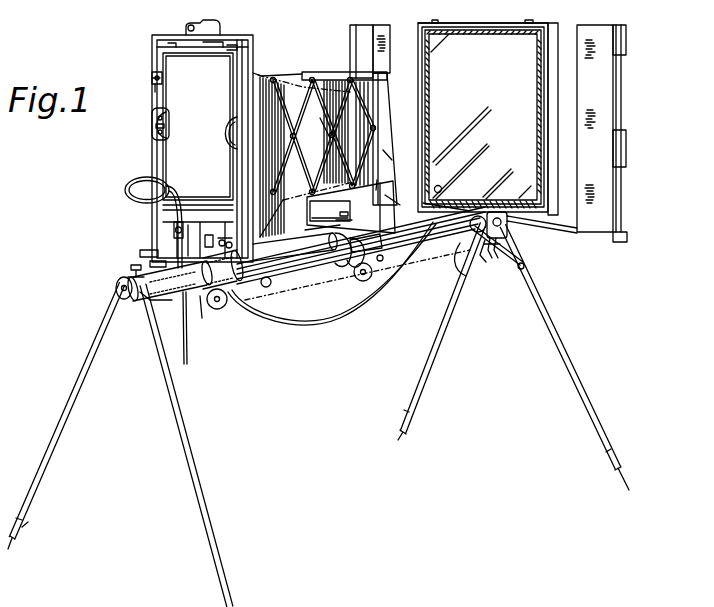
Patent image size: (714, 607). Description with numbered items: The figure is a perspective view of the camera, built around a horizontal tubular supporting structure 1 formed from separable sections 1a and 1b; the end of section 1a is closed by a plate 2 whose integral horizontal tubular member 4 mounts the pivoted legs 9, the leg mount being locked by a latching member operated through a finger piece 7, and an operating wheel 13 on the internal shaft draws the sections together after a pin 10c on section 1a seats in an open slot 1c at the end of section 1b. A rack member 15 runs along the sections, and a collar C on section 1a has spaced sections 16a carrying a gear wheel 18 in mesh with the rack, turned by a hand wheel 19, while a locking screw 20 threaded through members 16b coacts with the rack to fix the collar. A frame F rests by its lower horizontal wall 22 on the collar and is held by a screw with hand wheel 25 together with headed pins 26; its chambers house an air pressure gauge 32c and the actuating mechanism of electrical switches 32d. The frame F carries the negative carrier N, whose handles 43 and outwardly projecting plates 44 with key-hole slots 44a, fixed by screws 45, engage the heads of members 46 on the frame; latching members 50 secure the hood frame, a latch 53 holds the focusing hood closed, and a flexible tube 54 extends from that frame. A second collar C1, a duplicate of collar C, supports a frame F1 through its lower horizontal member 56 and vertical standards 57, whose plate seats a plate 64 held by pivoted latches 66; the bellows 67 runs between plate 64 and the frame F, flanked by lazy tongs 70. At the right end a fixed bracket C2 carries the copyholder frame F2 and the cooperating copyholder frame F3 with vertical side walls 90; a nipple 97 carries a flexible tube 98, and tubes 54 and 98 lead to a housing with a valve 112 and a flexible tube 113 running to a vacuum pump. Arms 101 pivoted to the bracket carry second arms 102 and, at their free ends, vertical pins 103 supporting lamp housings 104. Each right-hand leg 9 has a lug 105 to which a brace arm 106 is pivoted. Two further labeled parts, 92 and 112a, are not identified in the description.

The negative carrier N is at (160, 156).
The members 46 is at (155, 75).
The key-hole slot 44a is at (156, 80).
The plates 44 is at (155, 88).
The screws 45 is at (162, 77).
The latch 53 is at (168, 124).
The handles 43 is at (224, 131).
The latching members 50 is at (218, 204).
The flexible tube 54 is at (125, 190).
The flexible tube 98 is at (327, 324).
The gauge 32c is at (173, 224).
The valve 112 is at (145, 250).
The bracket plate 112a is at (155, 263).
The electrical switches 32d is at (230, 244).
The operating hand wheel 25 is at (345, 213).
The headed pins 26 is at (330, 209).
The second collar C1 is at (376, 234).
The frame F is at (266, 54).
The bellows 67 is at (269, 78).
The plate 64 is at (370, 95).
The lazy tongs 70 is at (323, 112).
The frame F1 is at (395, 87).
The vertical housing 104 is at (596, 28).
The vertical pin 103 is at (624, 199).
The copyholder frame F2 is at (564, 34).
The bracket C2 is at (483, 116).
The ground glass 92 is at (441, 99).
The vertical side walls 90 is at (420, 40).
The nipple 97 is at (441, 184).
The vertical standards 57 is at (383, 150).
The pivoted latches 66 is at (377, 180).
The second arm 102 is at (385, 195).
The arms 101 is at (569, 224).
The horizontal tubular supporting structure 1 is at (269, 235).
The tubular section 1a is at (300, 272).
The tubular section 1b is at (440, 250).
The open slot 1c is at (345, 250).
The pin 10c is at (332, 237).
The lower horizontal member 56 is at (320, 230).
The lower horizontal wall 22 is at (200, 253).
The collar C is at (232, 277).
The operating hand wheel 19 is at (362, 282).
The locking screw 20 is at (382, 260).
The collar sections 16a is at (352, 272).
The members 16b is at (378, 266).
The gear wheel 18 is at (201, 300).
The flexible tube 113 is at (189, 353).
The operating wheel 13 is at (115, 283).
The operating finger piece 7 is at (132, 264).
The horizontal tubular member 4 is at (131, 273).
The rack member 15 is at (170, 300).
The plate 2 is at (118, 301).
The leg 9 is at (543, 296).
The copyholder frame F3 is at (532, 228).
The lug 105 is at (518, 270).
The arm 106 is at (512, 262).